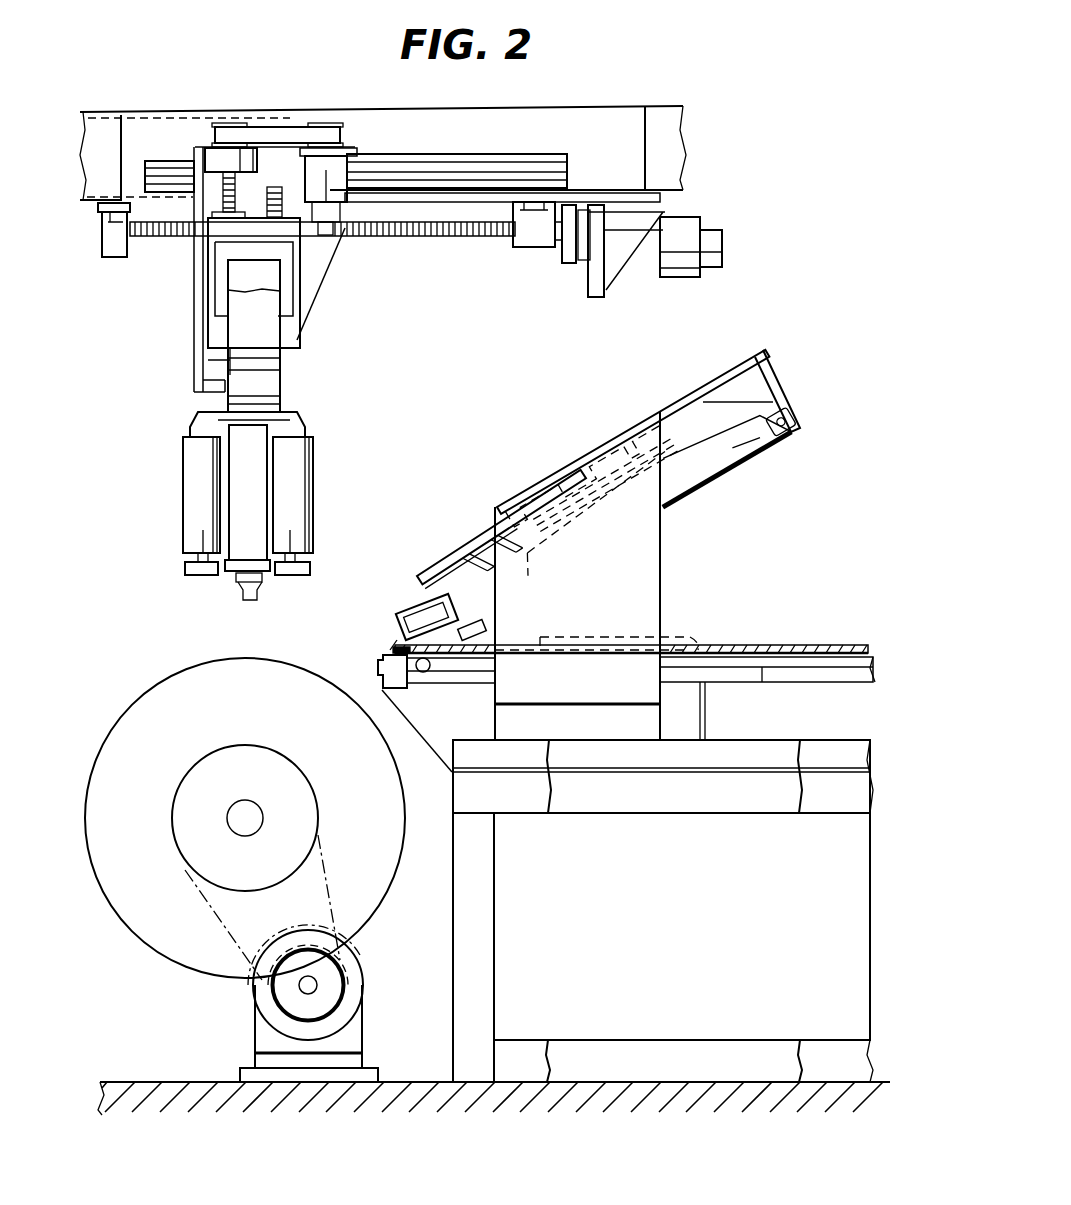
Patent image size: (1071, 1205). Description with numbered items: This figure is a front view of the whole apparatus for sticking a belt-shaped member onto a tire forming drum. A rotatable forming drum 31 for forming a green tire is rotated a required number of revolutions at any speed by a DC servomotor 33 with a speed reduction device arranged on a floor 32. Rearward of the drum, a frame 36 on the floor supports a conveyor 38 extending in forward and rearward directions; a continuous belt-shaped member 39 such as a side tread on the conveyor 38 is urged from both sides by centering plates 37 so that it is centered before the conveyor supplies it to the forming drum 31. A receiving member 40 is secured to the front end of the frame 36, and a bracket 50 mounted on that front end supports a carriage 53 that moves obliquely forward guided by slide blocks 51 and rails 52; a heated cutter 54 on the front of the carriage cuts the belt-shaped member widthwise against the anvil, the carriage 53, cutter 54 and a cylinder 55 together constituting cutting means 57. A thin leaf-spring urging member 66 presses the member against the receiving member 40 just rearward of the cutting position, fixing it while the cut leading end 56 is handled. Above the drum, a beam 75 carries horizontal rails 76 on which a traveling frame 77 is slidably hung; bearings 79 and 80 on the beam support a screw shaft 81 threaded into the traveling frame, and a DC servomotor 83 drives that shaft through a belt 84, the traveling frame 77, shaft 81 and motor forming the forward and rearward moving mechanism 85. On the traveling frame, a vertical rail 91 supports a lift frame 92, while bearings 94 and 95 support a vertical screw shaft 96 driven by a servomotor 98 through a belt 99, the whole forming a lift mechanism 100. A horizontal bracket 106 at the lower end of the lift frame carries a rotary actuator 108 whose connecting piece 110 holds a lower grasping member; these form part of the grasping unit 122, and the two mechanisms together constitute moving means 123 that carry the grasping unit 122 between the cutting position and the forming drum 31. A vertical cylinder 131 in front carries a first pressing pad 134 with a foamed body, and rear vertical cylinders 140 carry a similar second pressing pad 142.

The forming drum 31 is at (150, 688).
The floor 32 is at (180, 1080).
The DC servomotor 33 is at (362, 985).
The frame 36 is at (494, 892).
The centering plates 37 is at (690, 636).
The conveyor 38 is at (762, 683).
The belt-shaped member 39 is at (808, 644).
The receiving member 40 is at (378, 662).
The bracket 50 is at (662, 545).
The slide blocks 51 is at (612, 440).
The rails 52 is at (465, 548).
The carriage 53 is at (398, 605).
The cutter 54 is at (396, 643).
The cylinder 55 is at (738, 470).
The cut leading end 56 is at (525, 585).
The cutting means 57 is at (411, 572).
The urging member 66 is at (485, 630).
The beam 75 is at (455, 116).
The horizontal rails 76 is at (567, 170).
The traveling frame 77 is at (330, 252).
The bearing 79 is at (112, 257).
The bearing 80 is at (538, 250).
The screw shaft 81 is at (478, 238).
The DC servomotor 83 is at (638, 280).
The belt 84 is at (572, 265).
The forward and rearward moving mechanism 85 is at (420, 238).
The rail 91 is at (274, 190).
The lift frame 92 is at (285, 376).
The bearing 94 is at (205, 153).
The bearing 95 is at (200, 396).
The vertical screw shaft 96 is at (222, 195).
The DC servomotor 98 is at (347, 200).
The belt 99 is at (288, 122).
The lift mechanism 100 is at (318, 298).
The horizontal bracket 106 is at (280, 418).
The rotary actuator 108 is at (240, 503).
The connecting piece 110 is at (240, 590).
The grasping unit 122 is at (268, 594).
The moving means 123 is at (362, 298).
The vertical cylinder 131 is at (193, 465).
The first pressing pad 134 is at (185, 568).
The vertical cylinders 140 is at (313, 462).
The second pressing pad 142 is at (310, 568).